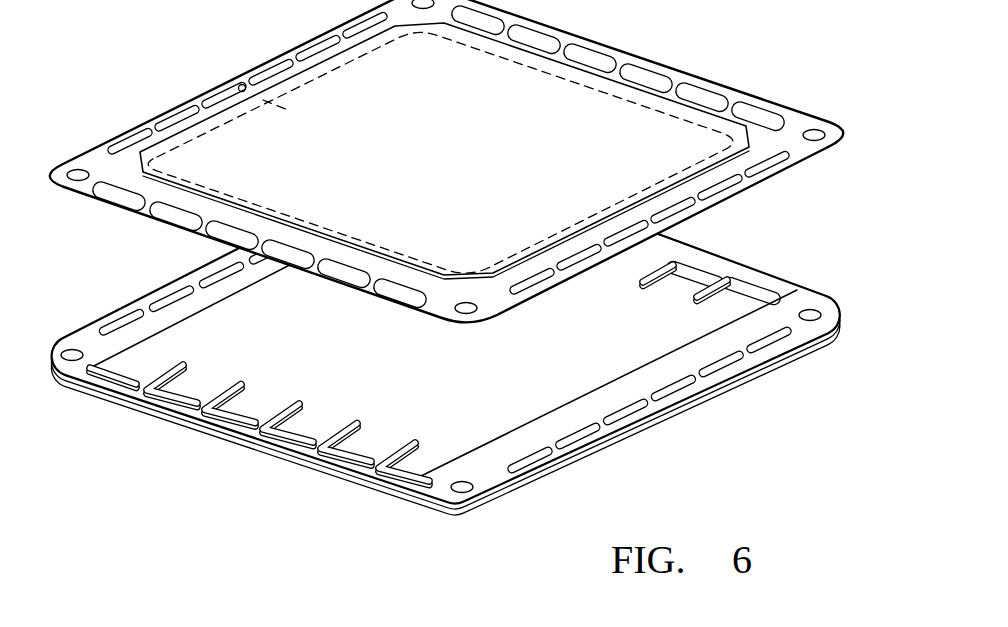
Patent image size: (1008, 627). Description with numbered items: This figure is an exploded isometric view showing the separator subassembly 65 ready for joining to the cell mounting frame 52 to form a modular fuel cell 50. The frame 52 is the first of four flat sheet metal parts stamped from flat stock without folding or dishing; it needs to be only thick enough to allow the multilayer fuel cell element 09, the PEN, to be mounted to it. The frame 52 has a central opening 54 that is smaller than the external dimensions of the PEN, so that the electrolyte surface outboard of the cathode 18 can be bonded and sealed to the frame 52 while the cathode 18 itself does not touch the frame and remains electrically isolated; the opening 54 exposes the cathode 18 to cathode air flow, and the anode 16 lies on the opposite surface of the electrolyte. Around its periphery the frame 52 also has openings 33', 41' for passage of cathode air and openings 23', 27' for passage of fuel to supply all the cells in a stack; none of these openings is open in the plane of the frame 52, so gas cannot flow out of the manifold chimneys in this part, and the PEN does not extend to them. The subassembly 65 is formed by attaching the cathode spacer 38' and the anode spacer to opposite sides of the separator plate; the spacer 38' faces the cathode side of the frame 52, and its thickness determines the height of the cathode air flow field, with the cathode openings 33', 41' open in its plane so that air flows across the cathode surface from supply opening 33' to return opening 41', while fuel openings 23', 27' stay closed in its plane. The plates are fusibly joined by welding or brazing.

The modular fuel cell 50 is at (680, 443).
The cell mounting frame 52 is at (100, 143).
The anode 16 is at (567, 103).
The cathode 18 is at (633, 167).
The multilayer fuel cell element 09 is at (441, 161).
The fuel supply opening 23' is at (300, 38).
The central opening 54 is at (238, 87).
The cathode air return opening 41' is at (796, 181).
The fuel return opening 27' is at (816, 172).
The cathode air supply opening 33' is at (122, 227).
The separator subassembly 65 is at (92, 393).
The cathode spacer 38' is at (446, 449).